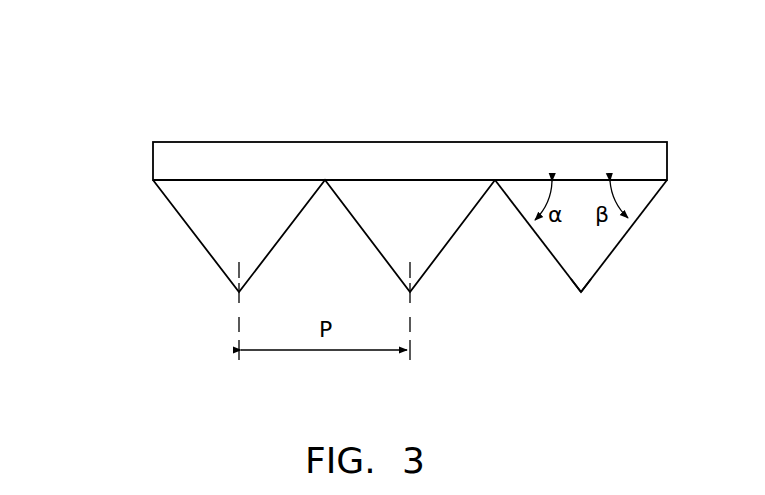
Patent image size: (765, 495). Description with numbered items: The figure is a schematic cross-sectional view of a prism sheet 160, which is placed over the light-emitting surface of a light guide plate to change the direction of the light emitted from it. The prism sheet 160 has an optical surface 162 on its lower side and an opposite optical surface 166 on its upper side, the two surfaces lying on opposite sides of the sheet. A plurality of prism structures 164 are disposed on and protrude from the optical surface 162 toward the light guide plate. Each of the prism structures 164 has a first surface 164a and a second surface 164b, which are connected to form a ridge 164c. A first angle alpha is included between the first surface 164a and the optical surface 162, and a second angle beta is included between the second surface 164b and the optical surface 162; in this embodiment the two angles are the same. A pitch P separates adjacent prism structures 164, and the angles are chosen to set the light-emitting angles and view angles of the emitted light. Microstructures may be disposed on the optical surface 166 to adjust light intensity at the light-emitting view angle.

The prism sheet 160 is at (132, 82).
The optical surface 162 is at (186, 188).
The prism structures 164 is at (213, 232).
The first surface 164a is at (542, 247).
The second surface 164b is at (620, 248).
The ridge 164c is at (580, 295).
The optical surface 166 is at (453, 142).